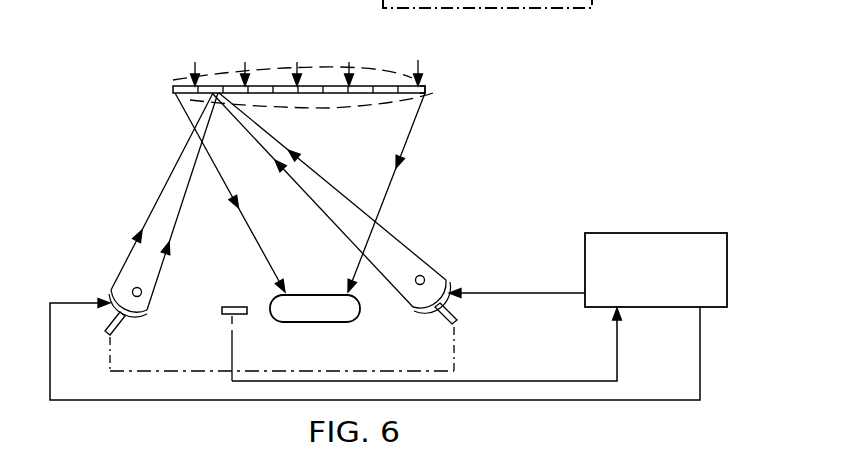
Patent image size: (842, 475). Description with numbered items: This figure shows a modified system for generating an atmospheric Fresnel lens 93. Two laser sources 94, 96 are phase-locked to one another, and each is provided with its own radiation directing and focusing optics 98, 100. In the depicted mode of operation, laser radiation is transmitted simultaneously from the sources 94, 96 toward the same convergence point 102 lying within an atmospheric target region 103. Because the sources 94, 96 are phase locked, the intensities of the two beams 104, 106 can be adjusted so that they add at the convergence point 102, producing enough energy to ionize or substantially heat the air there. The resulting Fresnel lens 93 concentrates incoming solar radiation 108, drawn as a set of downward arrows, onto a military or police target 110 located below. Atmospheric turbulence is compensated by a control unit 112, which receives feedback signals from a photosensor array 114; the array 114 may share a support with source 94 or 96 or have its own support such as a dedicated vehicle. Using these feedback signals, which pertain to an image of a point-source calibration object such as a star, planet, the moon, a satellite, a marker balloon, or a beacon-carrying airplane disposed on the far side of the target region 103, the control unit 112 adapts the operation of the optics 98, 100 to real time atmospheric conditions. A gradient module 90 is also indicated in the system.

The gradient module 90 is at (530, 0).
The atmospheric Fresnel lens 93 is at (430, 89).
The laser source 94 is at (106, 322).
The laser source 96 is at (458, 321).
The radiation directing and focusing optics 98 is at (148, 313).
The radiation directing and focusing optics 100 is at (448, 283).
The convergence point 102 is at (212, 85).
The atmospheric target region 103 is at (175, 98).
The laser beam 104 is at (166, 183).
The laser beam 106 is at (382, 228).
The incoming solar radiation 108 is at (418, 62).
The military or police target 110 is at (305, 292).
The control unit 112 is at (617, 233).
The photosensor array 114 is at (233, 293).